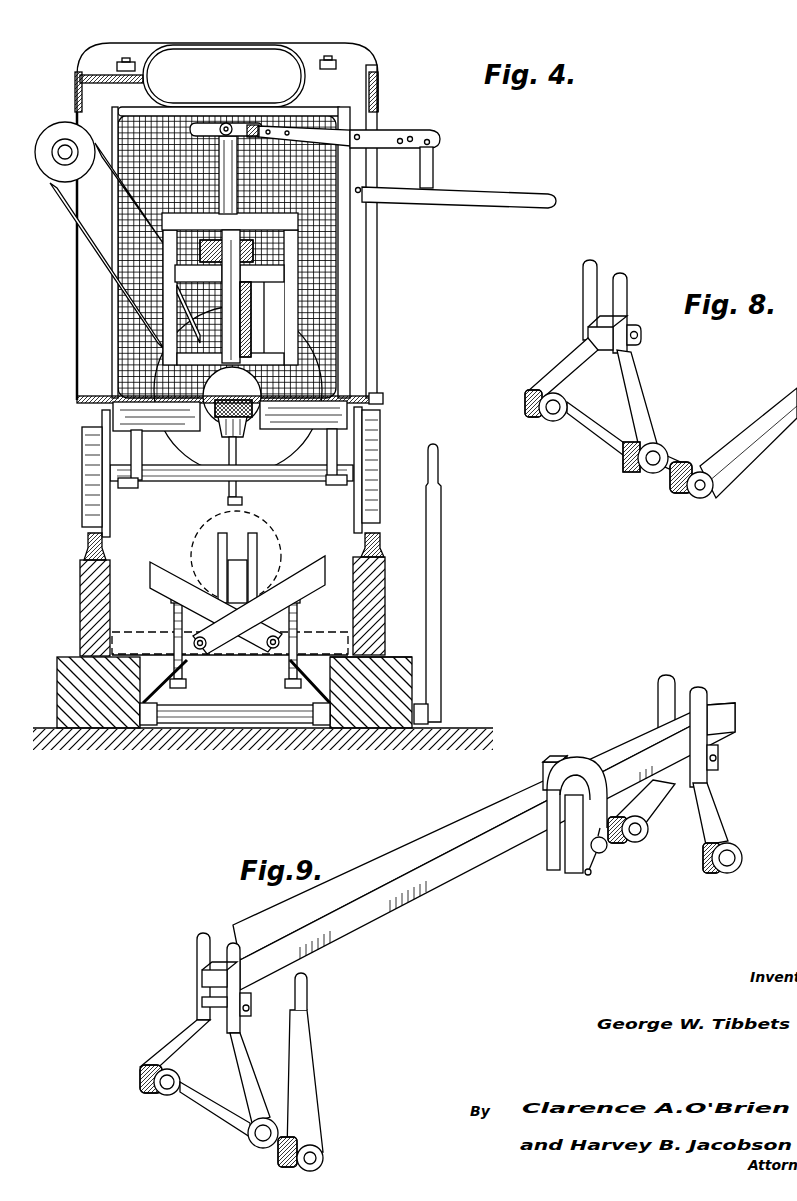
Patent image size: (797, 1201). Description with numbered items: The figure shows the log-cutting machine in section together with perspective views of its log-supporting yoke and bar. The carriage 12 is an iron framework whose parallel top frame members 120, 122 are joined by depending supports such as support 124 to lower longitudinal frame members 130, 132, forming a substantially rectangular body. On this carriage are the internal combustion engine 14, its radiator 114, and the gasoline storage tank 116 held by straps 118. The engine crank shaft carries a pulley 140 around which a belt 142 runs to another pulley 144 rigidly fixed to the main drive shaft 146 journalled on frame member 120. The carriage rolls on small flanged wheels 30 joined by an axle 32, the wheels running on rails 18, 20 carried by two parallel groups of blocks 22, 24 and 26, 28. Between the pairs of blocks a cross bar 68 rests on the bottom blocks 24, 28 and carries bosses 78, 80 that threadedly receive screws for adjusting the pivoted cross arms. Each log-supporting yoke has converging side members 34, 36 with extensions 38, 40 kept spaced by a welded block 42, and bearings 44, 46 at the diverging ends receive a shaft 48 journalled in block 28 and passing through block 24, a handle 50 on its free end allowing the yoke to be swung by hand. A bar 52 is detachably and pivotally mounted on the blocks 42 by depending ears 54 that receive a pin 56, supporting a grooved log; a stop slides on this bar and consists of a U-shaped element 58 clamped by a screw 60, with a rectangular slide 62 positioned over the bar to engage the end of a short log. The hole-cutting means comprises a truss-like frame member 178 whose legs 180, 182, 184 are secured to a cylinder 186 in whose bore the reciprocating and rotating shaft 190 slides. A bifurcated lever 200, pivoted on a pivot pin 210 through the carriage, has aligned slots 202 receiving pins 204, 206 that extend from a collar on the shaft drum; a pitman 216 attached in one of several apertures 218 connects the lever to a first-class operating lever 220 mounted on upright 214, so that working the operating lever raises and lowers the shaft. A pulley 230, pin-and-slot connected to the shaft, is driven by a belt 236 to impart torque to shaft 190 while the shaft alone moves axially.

In FIG. 4, the carriage 12 is at (68, 381).
In FIG. 4, the internal combustion engine 14 is at (307, 388).
In FIG. 4, the rail 18 is at (376, 540).
In FIG. 4, the rail 20 is at (88, 543).
In FIG. 4, the block 22 is at (380, 618).
In FIG. 4, the block 24 is at (392, 670).
In FIG. 4, the block 26 is at (86, 604).
In FIG. 4, the block 28 is at (62, 678).
In FIG. 4, the flanged wheels 30 is at (90, 452).
In FIG. 4, the axle 32 is at (273, 468).
In FIG. 8, the side member 34 is at (641, 390).
In FIG. 8, the side member 36 is at (575, 356).
In FIG. 4, the extension 38 is at (257, 540).
In FIG. 8, the extension 38 is at (626, 281).
In FIG. 4, the extension 40 is at (220, 545).
In FIG. 8, the extension 40 is at (586, 274).
In FIG. 8, the block 42 is at (600, 341).
In FIG. 9, the block 42 is at (215, 1022).
In FIG. 8, the bearing 44 is at (633, 470).
In FIG. 8, the bearing 46 is at (537, 418).
In FIG. 4, the shaft 48 is at (253, 723).
In FIG. 8, the shaft 48 is at (663, 462).
In FIG. 4, the handle 50 is at (441, 586).
In FIG. 8, the handle 50 is at (740, 461).
In FIG. 9, the handle 50 is at (308, 1034).
In FIG. 4, the bar 52 is at (236, 597).
In FIG. 9, the bar 52 is at (463, 840).
In FIG. 9, the depending ears 54 is at (252, 998).
In FIG. 9, the pin 56 is at (252, 1015).
In FIG. 9, the U-shaped element 58 is at (583, 768).
In FIG. 9, the screw 60 is at (605, 850).
In FIG. 9, the rectangular slide 62 is at (547, 772).
In FIG. 4, the cross bar 68 is at (337, 630).
In FIG. 4, the boss 78 is at (167, 640).
In FIG. 4, the boss 80 is at (312, 643).
In FIG. 4, the radiator 114 is at (230, 252).
In FIG. 4, the gasoline storage tank 116 is at (280, 50).
In FIG. 4, the straps 118 is at (147, 64).
In FIG. 4, the top frame member 120 is at (80, 90).
In FIG. 4, the top frame member 122 is at (374, 76).
In FIG. 4, the support 124 is at (378, 249).
In FIG. 4, the longitudinal frame member 130 is at (382, 399).
In FIG. 4, the longitudinal frame member 132 is at (83, 411).
In FIG. 4, the pulley 140 is at (247, 430).
In FIG. 4, the belt 142 is at (60, 208).
In FIG. 4, the pulley 144 is at (47, 148).
In FIG. 4, the main drive shaft 146 is at (62, 155).
In FIG. 4, the truss-like frame member 178 is at (281, 206).
In FIG. 4, the leg 180 is at (265, 262).
In FIG. 4, the leg 182 is at (258, 356).
In FIG. 4, the leg 184 is at (185, 276).
In FIG. 4, the cylinder 186 is at (205, 214).
In FIG. 4, the shaft 190 is at (228, 164).
In FIG. 4, the bifurcated lever 200 is at (387, 133).
In FIG. 4, the slots 202 is at (190, 131).
In FIG. 4, the pin 204 is at (224, 123).
In FIG. 4, the pin 206 is at (250, 124).
In FIG. 4, the pivot pin 210 is at (364, 134).
In FIG. 4, the upright 214 is at (351, 292).
In FIG. 4, the pitman 216 is at (434, 169).
In FIG. 4, the apertures 218 is at (412, 138).
In FIG. 4, the operating lever 220 is at (462, 203).
In FIG. 4, the pulley 230 is at (228, 296).
In FIG. 4, the belt 236 is at (200, 252).